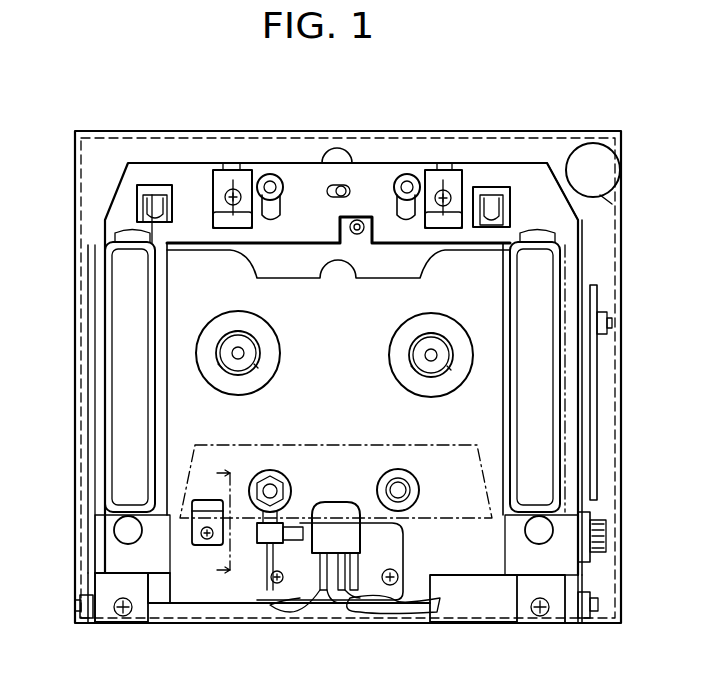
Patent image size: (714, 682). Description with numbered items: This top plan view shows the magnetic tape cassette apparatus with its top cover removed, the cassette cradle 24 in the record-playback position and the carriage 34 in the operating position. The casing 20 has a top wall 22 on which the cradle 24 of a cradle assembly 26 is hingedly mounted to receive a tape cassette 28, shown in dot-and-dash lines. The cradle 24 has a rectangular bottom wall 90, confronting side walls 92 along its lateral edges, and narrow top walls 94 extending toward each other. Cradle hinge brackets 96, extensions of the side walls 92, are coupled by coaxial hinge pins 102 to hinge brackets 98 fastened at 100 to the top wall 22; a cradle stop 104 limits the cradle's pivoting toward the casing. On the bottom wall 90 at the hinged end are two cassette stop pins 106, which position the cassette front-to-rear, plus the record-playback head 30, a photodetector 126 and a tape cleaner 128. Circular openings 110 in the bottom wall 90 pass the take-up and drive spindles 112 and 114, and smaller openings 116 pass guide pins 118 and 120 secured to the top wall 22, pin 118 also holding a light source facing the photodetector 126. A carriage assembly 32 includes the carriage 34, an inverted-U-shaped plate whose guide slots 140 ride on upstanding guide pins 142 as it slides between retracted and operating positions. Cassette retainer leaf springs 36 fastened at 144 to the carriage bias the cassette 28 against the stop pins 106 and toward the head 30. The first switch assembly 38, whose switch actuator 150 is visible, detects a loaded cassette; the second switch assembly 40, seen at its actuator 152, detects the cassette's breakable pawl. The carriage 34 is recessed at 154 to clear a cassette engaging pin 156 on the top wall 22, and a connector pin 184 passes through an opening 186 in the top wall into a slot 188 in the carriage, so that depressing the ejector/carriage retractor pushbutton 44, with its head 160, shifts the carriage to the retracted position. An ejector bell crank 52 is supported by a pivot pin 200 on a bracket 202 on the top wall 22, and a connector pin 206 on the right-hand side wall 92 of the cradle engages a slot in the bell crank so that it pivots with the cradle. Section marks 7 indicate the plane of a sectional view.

The casing 20 is at (76, 180).
The top wall 22 is at (82, 207).
The cassette cradle 24 is at (88, 352).
The cradle assembly 26 is at (161, 600).
The tape cassette 28 is at (104, 377).
The record-playback head 30 is at (342, 600).
The carriage assembly 32 is at (108, 178).
The carriage 34 is at (176, 163).
The cassette retainer leaf springs 36 is at (230, 168).
The first switch assembly 38 is at (520, 168).
The second switch assembly 40 is at (152, 190).
The cassette ejector/carriage retractor pushbutton 44 is at (612, 205).
The ejector bell crank 52 is at (597, 368).
The bottom wall 90 is at (248, 600).
The side walls 92 is at (105, 455).
The top walls 94 is at (112, 325).
The cradle hinge brackets 96 is at (92, 580).
The hinge brackets 98 is at (92, 620).
The fastening screws 100 is at (123, 616).
The hinge pins 102 is at (74, 604).
The cradle stop 104 is at (338, 280).
The cassette stop pins 106 is at (120, 530).
The circular openings 110 is at (274, 372).
The take-up spindle 112 is at (418, 342).
The drive spindle 114 is at (250, 340).
The smaller openings 116 is at (290, 497).
The guide pin 118 is at (270, 484).
The guide pin 120 is at (398, 488).
The photodetector 126 is at (255, 535).
The tape cleaner 128 is at (198, 548).
The guide slots 140 is at (276, 198).
The guide pins 142 is at (268, 175).
The fastening points 144 is at (233, 190).
The switch actuator 150 is at (498, 190).
The switch actuator 152 is at (148, 178).
The recess 154 is at (340, 250).
The cassette engaging pin 156 is at (357, 236).
The head 160 is at (610, 185).
The connector pin 184 is at (348, 190).
The opening 186 is at (335, 150).
The slot 188 is at (340, 183).
The pivot pin 200 is at (608, 536).
The bracket 202 is at (592, 518).
The connector pin 206 is at (612, 325).
The section line 7- 7 is at (213, 524).